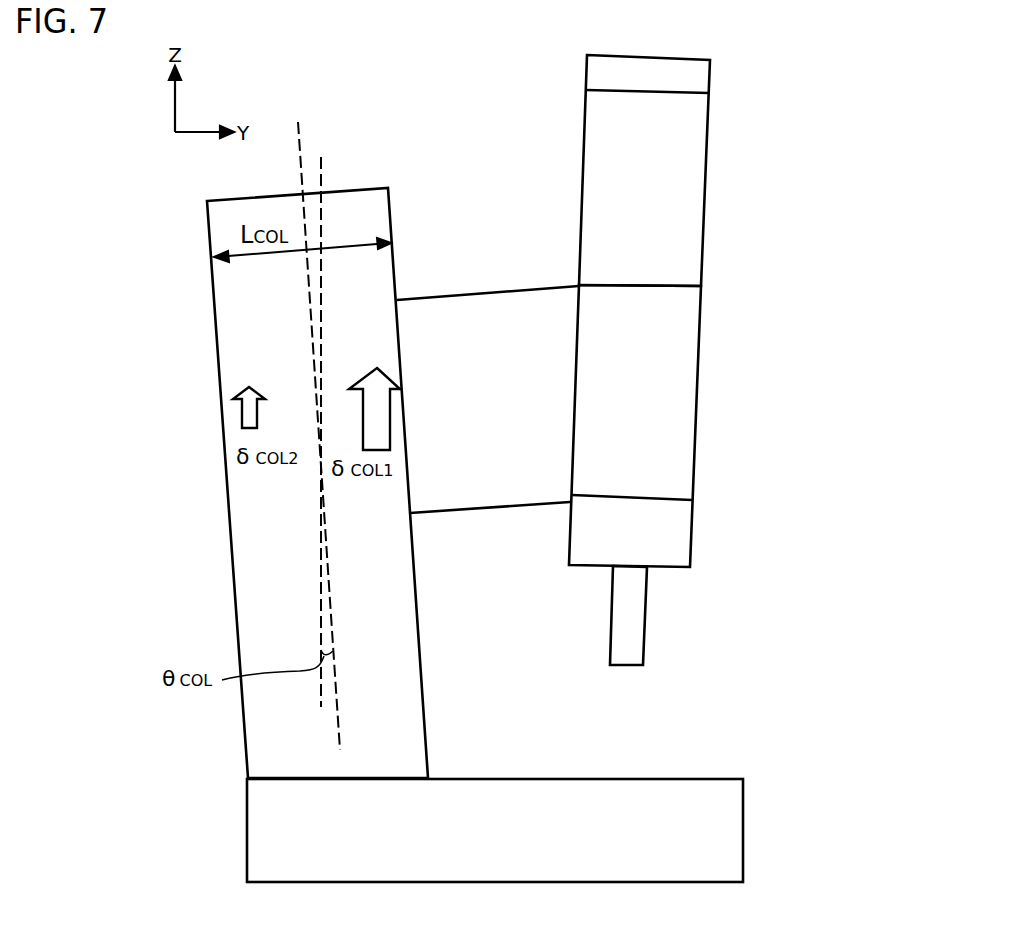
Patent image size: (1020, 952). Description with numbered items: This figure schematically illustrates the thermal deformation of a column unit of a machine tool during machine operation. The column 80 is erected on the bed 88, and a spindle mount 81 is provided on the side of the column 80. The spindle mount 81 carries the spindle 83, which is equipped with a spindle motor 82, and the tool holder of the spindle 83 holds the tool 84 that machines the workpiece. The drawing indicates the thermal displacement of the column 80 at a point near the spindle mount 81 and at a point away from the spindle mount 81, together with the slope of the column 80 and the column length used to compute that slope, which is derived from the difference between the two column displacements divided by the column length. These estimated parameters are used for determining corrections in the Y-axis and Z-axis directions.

The column 80 is at (229, 523).
The spindle mount 81 is at (517, 288).
The spindle motor 82 is at (705, 178).
The spindle 83 is at (698, 420).
The tool 84 is at (645, 630).
The bed 88 is at (745, 837).